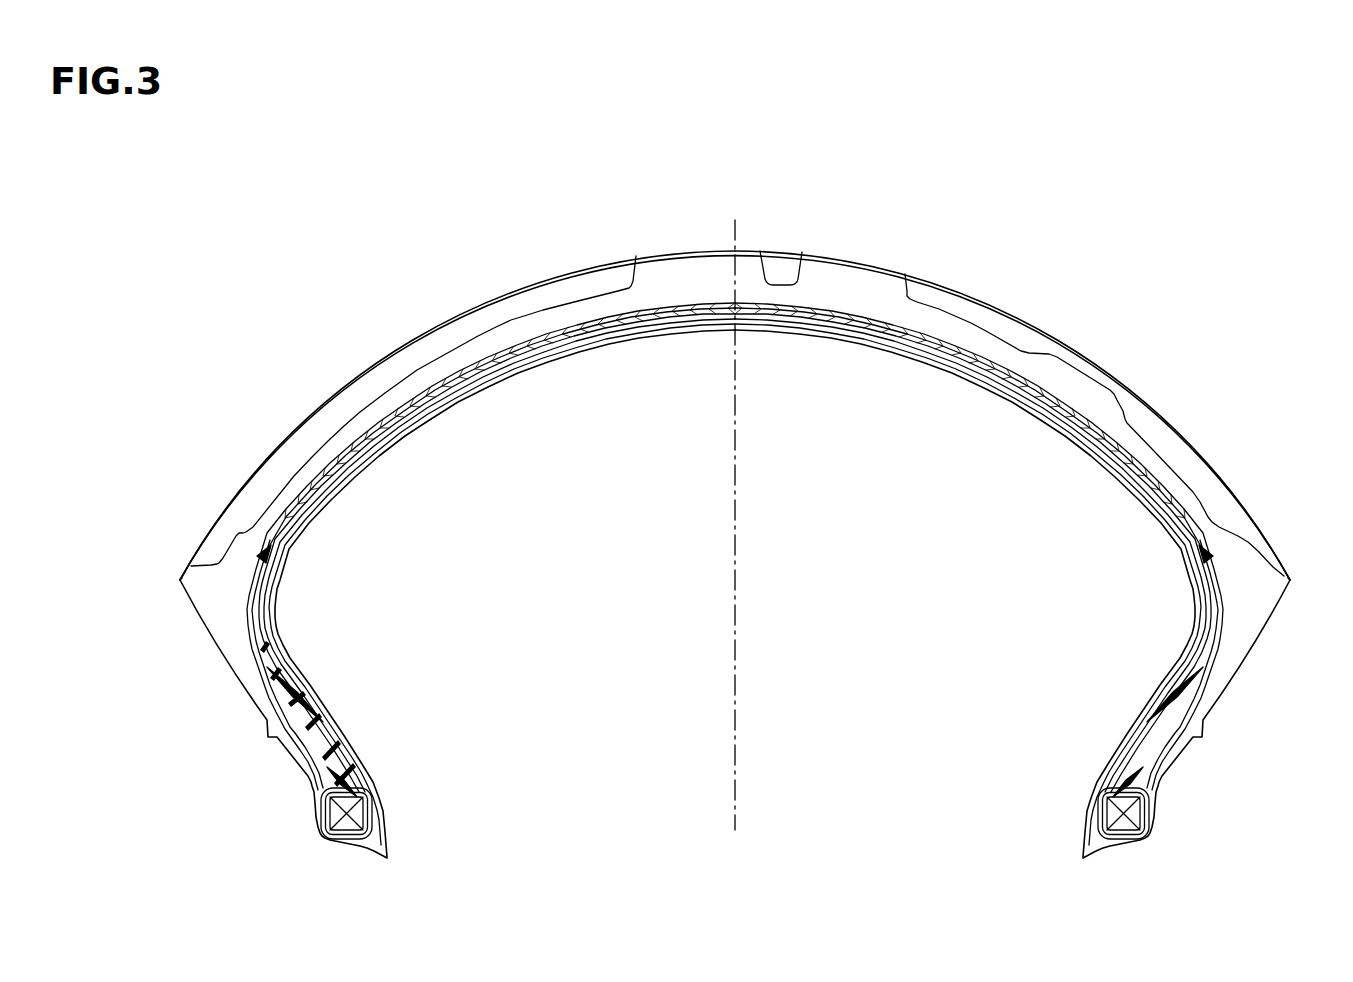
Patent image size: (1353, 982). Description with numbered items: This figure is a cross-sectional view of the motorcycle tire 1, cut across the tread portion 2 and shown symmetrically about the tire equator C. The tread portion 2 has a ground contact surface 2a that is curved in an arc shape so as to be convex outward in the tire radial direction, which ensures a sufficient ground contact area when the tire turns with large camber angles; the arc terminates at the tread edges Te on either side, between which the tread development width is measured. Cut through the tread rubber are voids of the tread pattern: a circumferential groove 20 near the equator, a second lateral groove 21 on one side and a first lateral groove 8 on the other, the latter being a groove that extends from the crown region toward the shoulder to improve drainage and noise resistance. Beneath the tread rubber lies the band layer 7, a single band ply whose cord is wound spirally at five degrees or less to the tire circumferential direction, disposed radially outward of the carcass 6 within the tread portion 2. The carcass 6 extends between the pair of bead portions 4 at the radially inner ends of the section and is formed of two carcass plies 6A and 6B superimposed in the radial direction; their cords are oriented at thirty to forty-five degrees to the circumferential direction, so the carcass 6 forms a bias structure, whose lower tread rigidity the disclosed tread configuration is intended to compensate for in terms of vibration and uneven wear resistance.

The motorcycle tire 1 is at (1176, 235).
The tread portion 2 is at (1084, 259).
The ground contact surface 2a is at (413, 340).
The circumferential groove 20 is at (780, 270).
The second lateral groove 21 is at (547, 297).
The first lateral groove 8 is at (967, 312).
The band layer 7 is at (878, 332).
The carcass 6 is at (1000, 668).
The carcass ply 6A is at (1117, 748).
The carcass ply 6B is at (1147, 696).
The bead portion 4 is at (292, 820).
The tread edge Te is at (192, 572).
The tire equator C is at (734, 511).